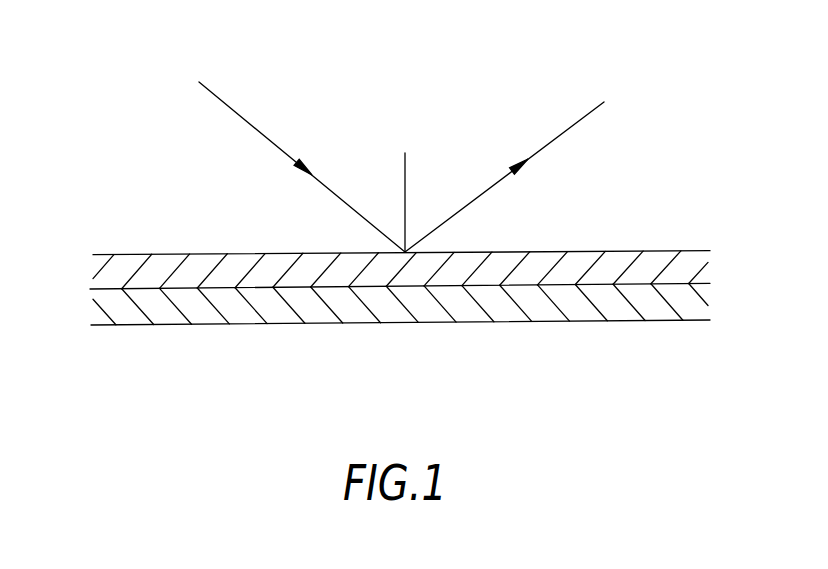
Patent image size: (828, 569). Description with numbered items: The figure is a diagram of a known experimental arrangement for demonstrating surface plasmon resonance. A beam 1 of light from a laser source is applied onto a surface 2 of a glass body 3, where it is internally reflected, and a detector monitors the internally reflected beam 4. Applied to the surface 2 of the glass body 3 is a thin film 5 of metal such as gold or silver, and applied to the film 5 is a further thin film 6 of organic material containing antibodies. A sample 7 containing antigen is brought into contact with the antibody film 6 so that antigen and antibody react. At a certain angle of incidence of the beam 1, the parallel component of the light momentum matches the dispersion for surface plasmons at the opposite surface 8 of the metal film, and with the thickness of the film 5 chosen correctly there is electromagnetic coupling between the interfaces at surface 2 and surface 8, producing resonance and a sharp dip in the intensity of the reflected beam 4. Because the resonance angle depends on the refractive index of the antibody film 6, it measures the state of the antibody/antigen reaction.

The beam of light 1 is at (317, 162).
The surface of glass body 2 is at (542, 250).
The glass body 3 is at (414, 94).
The internally reflected beam 4 is at (520, 157).
The thin film of metal 5 is at (691, 260).
The thin film of organic material containing antibodies 6 is at (688, 307).
The sample 7 is at (410, 379).
The opposite surface of metal film 8 is at (115, 289).